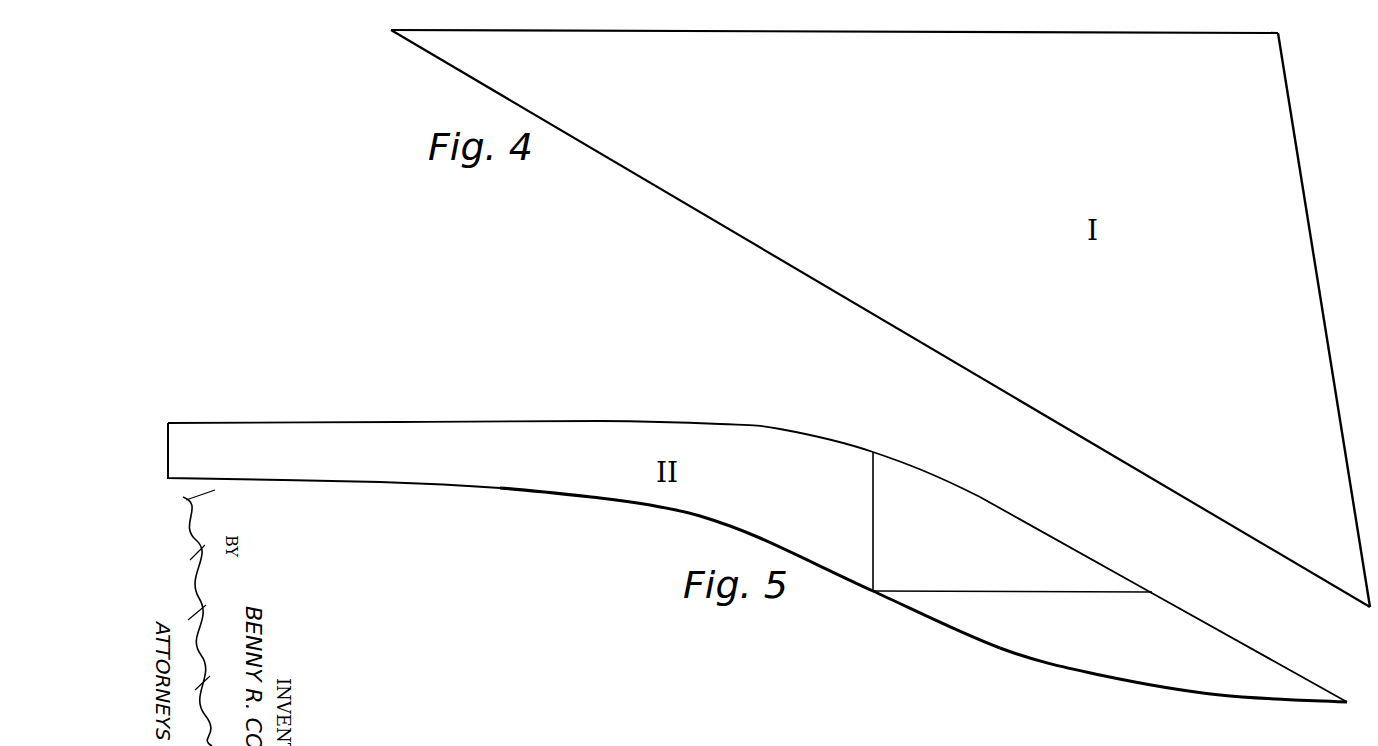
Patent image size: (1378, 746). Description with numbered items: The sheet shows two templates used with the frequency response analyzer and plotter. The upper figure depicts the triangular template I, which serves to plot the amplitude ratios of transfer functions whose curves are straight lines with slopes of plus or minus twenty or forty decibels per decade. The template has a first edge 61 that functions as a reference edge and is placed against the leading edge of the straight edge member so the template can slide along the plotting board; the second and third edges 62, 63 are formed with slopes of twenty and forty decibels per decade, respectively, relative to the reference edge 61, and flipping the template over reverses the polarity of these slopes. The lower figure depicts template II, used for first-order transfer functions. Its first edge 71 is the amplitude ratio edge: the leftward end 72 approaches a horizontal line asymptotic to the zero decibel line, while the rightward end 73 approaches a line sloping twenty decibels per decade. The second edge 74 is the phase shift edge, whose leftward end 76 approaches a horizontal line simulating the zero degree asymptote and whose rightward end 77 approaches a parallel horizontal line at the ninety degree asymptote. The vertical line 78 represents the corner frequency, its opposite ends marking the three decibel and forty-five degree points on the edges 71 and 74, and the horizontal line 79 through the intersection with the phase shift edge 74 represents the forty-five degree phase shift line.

In FIG. 4, the first edge 61 is at (695, 210).
In FIG. 4, the second edge 62 is at (814, 29).
In FIG. 4, the third edge 63 is at (1301, 173).
In FIG. 5, the first edge 71 is at (783, 429).
In FIG. 5, the leftward end 72 is at (319, 423).
In FIG. 5, the rightward end 73 is at (1081, 550).
In FIG. 5, the second edge 74 is at (600, 500).
In FIG. 5, the leftward end 76 is at (280, 481).
In FIG. 5, the rightward end 77 is at (1091, 677).
In FIG. 5, the vertical line 78 is at (873, 476).
In FIG. 5, the horizontal line 79 is at (935, 592).